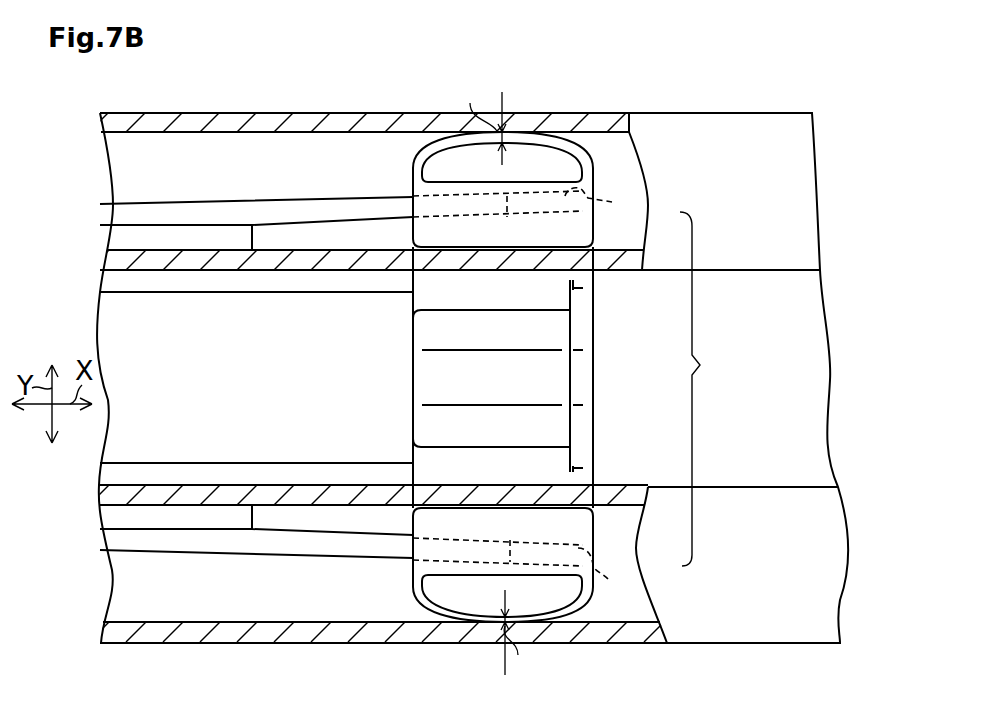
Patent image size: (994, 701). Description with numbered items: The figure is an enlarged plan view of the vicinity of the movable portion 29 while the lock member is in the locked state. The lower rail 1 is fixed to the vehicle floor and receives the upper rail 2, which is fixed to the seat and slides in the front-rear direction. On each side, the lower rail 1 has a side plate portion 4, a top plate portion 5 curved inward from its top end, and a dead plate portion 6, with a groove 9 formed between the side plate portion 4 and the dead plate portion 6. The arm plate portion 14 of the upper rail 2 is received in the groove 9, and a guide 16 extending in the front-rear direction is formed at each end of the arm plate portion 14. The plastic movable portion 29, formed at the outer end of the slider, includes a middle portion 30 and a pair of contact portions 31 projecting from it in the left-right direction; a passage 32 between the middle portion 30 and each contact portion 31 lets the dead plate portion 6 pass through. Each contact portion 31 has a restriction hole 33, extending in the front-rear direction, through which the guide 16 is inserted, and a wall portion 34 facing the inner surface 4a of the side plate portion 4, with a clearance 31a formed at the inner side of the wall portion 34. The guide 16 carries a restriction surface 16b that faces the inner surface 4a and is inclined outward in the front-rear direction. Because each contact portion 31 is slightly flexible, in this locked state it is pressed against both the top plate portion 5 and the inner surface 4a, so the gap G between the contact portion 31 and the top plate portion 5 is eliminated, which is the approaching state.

The lower rail 1 is at (761, 104).
The upper rail 2 is at (110, 315).
The side plate portion 4 is at (283, 126).
The inner surface 4a is at (598, 140).
The top plate portion 5 is at (795, 202).
The dead plate portion 6 is at (330, 271).
The groove 9 is at (197, 150).
The arm plate portion 14 is at (118, 213).
The guide 16 is at (318, 205).
The restriction surface 16b is at (428, 190).
The movable portion 29 is at (719, 389).
The middle portion 30 is at (553, 375).
The contact portion 31 is at (585, 226).
The clearance 31a is at (452, 168).
The passage 32 is at (413, 300).
The restriction hole 33 is at (606, 399).
The wall portion 34 is at (502, 380).
The gap G is at (507, 382).